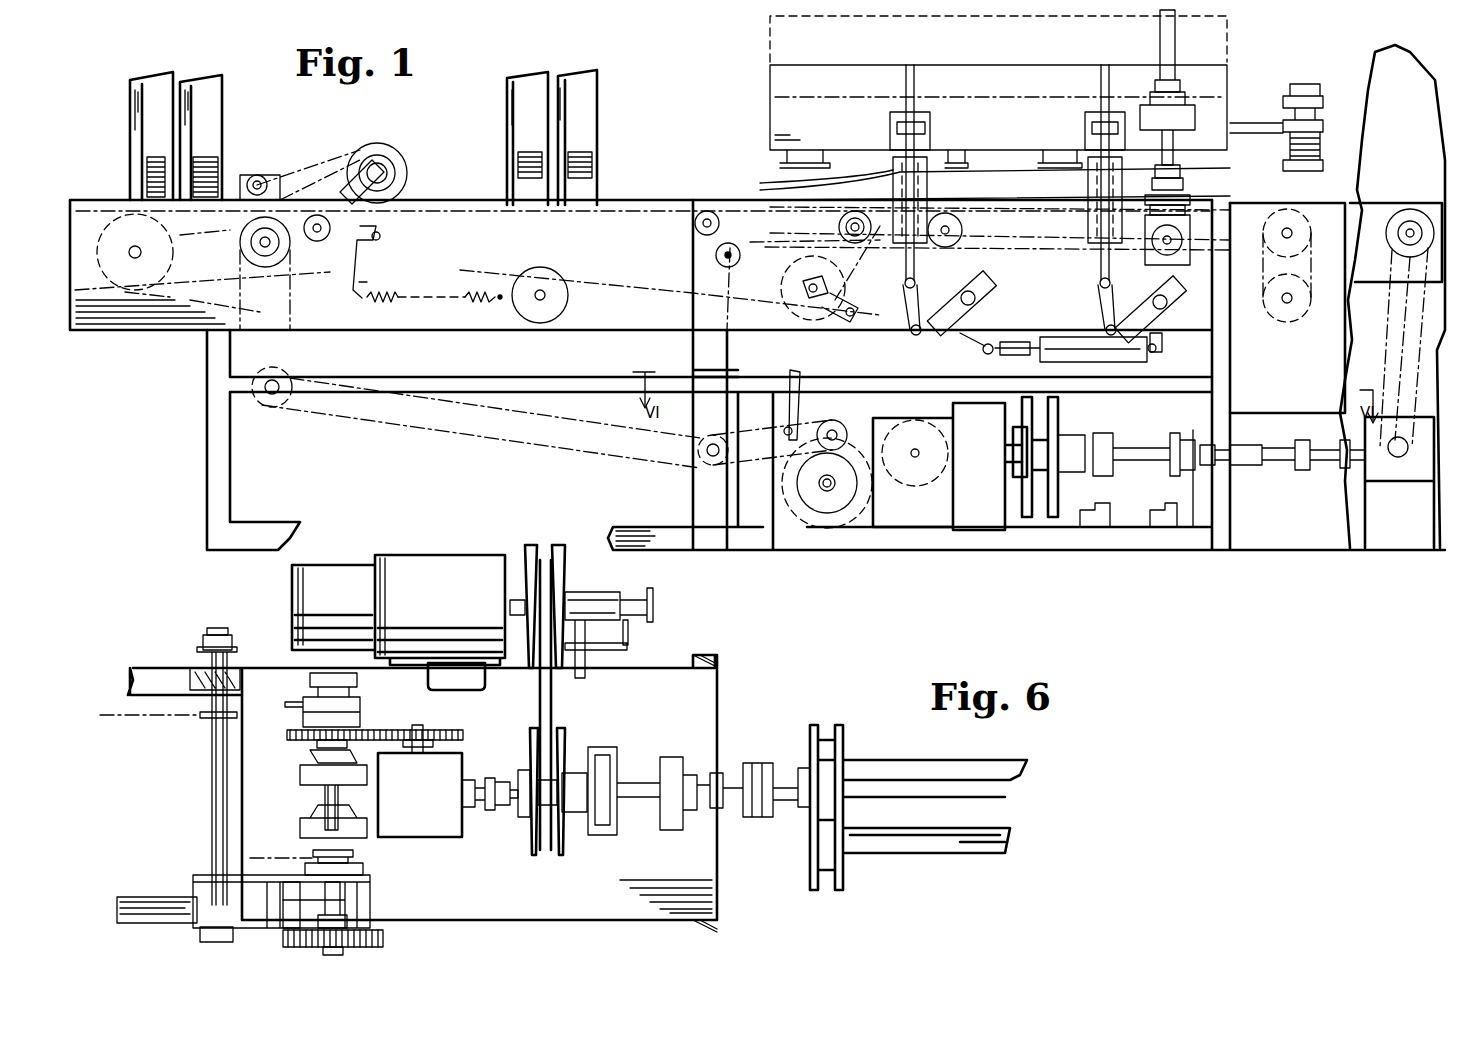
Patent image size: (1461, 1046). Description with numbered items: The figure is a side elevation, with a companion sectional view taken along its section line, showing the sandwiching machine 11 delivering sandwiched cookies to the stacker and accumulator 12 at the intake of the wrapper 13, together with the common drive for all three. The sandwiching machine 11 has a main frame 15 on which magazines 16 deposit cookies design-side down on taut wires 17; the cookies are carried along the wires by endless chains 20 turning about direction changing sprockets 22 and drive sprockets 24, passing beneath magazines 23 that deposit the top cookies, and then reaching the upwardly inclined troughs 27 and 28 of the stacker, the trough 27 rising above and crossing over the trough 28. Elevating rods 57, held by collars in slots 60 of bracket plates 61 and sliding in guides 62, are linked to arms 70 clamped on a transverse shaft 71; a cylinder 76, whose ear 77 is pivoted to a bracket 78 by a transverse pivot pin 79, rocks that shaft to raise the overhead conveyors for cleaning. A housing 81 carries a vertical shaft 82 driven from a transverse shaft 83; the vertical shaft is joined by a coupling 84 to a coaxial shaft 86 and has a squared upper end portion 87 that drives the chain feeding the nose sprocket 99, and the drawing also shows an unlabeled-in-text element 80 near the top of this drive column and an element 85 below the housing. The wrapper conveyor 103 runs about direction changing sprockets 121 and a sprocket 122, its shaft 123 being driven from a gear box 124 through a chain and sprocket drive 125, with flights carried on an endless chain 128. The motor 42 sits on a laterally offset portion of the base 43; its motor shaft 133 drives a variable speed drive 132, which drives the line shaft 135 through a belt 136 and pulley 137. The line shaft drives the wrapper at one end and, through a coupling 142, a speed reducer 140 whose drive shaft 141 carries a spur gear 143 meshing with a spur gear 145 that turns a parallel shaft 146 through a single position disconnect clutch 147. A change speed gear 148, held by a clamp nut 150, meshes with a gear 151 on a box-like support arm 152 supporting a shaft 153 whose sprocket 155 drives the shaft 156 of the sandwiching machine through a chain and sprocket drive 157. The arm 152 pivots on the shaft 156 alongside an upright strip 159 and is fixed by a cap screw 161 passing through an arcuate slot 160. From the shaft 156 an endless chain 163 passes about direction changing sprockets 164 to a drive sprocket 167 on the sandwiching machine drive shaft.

In FIG. 1, the sandwiching machine 11 is at (458, 192).
In FIG. 1, the stacker and accumulator 12 is at (1222, 310).
In FIG. 1, the wrapper 13 is at (1287, 450).
In FIG. 1, the main frame 15 is at (180, 346).
In FIG. 1, the magazines 16 is at (130, 147).
In FIG. 1, the taut wires 17 is at (424, 216).
In FIG. 1, the endless chains 20 is at (595, 225).
In FIG. 1, the direction changing sprockets 22 is at (170, 252).
In FIG. 1, the magazines 23 is at (507, 115).
In FIG. 1, the drive sprockets 24 is at (840, 236).
In FIG. 1, the trough 27 is at (992, 184).
In FIG. 1, the trough 28 is at (995, 175).
In FIG. 1, the motor 42 is at (935, 400).
In FIG. 6, the motor 42 is at (443, 560).
In FIG. 1, the base 43 is at (1050, 550).
In FIG. 1, the elevating rods 57 is at (909, 96).
In FIG. 1, the slots 60 is at (897, 128).
In FIG. 1, the bracket plates 61 is at (890, 116).
In FIG. 1, the guides 62 is at (895, 165).
In FIG. 1, the arm 70 is at (940, 300).
In FIG. 1, the transverse shaft 71 is at (1178, 308).
In FIG. 1, the cylinder 76 is at (1068, 337).
In FIG. 1, the ear 77 is at (1153, 353).
In FIG. 1, the bracket 78 is at (1170, 345).
In FIG. 1, the transverse pivot pin 79 is at (1175, 360).
In FIG. 1, the head block 80 is at (1190, 133).
In FIG. 1, the housing 81 is at (1185, 210).
In FIG. 1, the vertical shaft 82 is at (1190, 198).
In FIG. 1, the transverse shaft 83 is at (1190, 232).
In FIG. 1, the coupling 84 is at (1183, 184).
In FIG. 1, the wheel 85 is at (1175, 255).
In FIG. 1, the coaxial shaft 86 is at (1180, 170).
In FIG. 1, the squared upper end portion 87 is at (1176, 45).
In FIG. 1, the nose sprocket 99 is at (1323, 166).
In FIG. 1, the wrapper conveyor 103 is at (1405, 190).
In FIG. 1, the direction changing sprockets 121 is at (1311, 245).
In FIG. 1, the sprocket 122 is at (1398, 245).
In FIG. 1, the shaft 123 is at (1398, 233).
In FIG. 1, the gear box 124 is at (1375, 480).
In FIG. 1, the chain and sprocket drive 125 is at (1412, 340).
In FIG. 1, the endless chain 128 is at (1345, 318).
In FIG. 1, the variable speed drive 132 is at (1068, 420).
In FIG. 6, the variable speed drive 132 is at (577, 562).
In FIG. 6, the motor shaft 133 is at (523, 560).
In FIG. 6, the line shaft 135 is at (643, 780).
In FIG. 6, the belt 136 is at (556, 718).
In FIG. 6, the pulley 137 is at (560, 845).
In FIG. 6, the speed reducer 140 is at (450, 837).
In FIG. 1, the drive shaft 141 is at (915, 458).
In FIG. 6, the drive shaft 141 is at (433, 744).
In FIG. 6, the coupling 142 is at (495, 808).
In FIG. 6, the spur gear 143 is at (446, 730).
In FIG. 6, the spur gear 145 is at (295, 750).
In FIG. 6, the parallel shaft 146 is at (325, 795).
In FIG. 6, the single position disconnect clutch 147 is at (360, 704).
In FIG. 1, the change speed gear 148 is at (842, 512).
In FIG. 6, the change speed gear 148 is at (383, 940).
In FIG. 6, the clamp nut 150 is at (345, 952).
In FIG. 1, the gear 151 is at (848, 428).
In FIG. 6, the gear 151 is at (318, 952).
In FIG. 1, the support arm 152 is at (761, 407).
In FIG. 6, the support arm 152 is at (372, 895).
In FIG. 6, the shaft 153 is at (345, 890).
In FIG. 6, the sprocket 155 is at (355, 856).
In FIG. 1, the shaft 156 is at (715, 468).
In FIG. 6, the shaft 156 is at (212, 797).
In FIG. 6, the chain and sprocket drive 157 is at (280, 855).
In FIG. 1, the upright strip 159 is at (738, 567).
In FIG. 6, the upright strip 159 is at (293, 928).
In FIG. 1, the arcuate slot 160 is at (793, 395).
In FIG. 1, the cap screw 161 is at (795, 440).
In FIG. 1, the endless chain 163 is at (693, 268).
In FIG. 6, the endless chain 163 is at (232, 648).
In FIG. 1, the direction changing sprockets 164 is at (760, 275).
In FIG. 1, the drive sprocket 167 is at (855, 243).